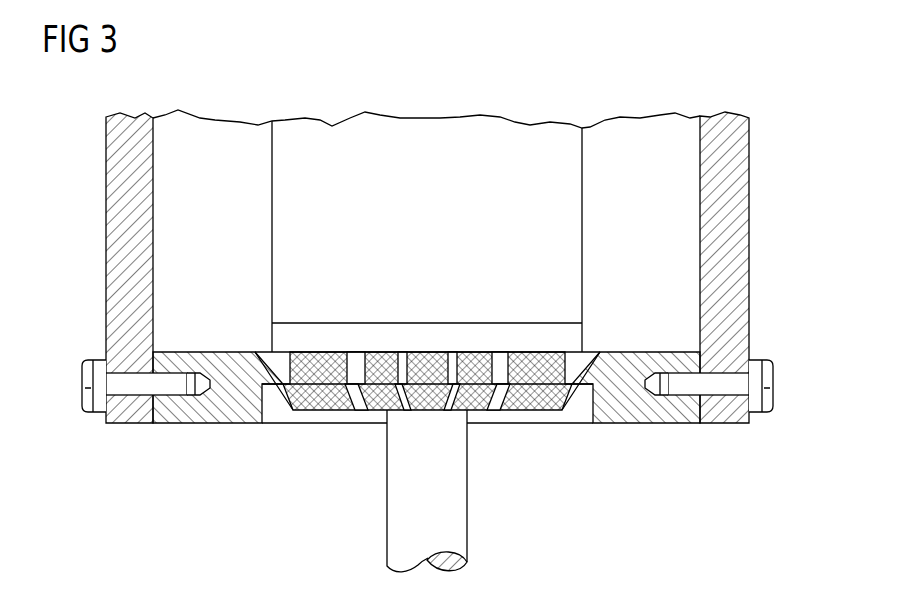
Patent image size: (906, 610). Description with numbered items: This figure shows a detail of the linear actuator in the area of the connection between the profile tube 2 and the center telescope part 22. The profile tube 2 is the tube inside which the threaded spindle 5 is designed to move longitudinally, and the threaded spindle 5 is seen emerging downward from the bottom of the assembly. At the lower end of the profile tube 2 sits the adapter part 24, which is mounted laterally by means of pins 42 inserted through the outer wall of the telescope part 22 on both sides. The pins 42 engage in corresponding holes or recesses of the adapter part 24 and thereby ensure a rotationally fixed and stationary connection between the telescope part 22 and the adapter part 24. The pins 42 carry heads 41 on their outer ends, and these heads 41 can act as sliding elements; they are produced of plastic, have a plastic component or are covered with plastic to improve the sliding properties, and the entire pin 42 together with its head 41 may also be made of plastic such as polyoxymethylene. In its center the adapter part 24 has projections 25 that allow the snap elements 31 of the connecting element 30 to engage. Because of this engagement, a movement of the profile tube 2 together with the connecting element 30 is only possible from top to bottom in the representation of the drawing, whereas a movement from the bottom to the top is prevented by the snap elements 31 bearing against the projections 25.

The profile tube 2 is at (576, 197).
The center telescope part 22 is at (735, 243).
The adapter part 24 is at (227, 413).
The projections 25 is at (281, 381).
The connecting element 30 is at (429, 411).
The snap elements 31 is at (317, 411).
The heads 41 is at (82, 386).
The pins 42 is at (130, 387).
The threaded spindle 5 is at (455, 502).